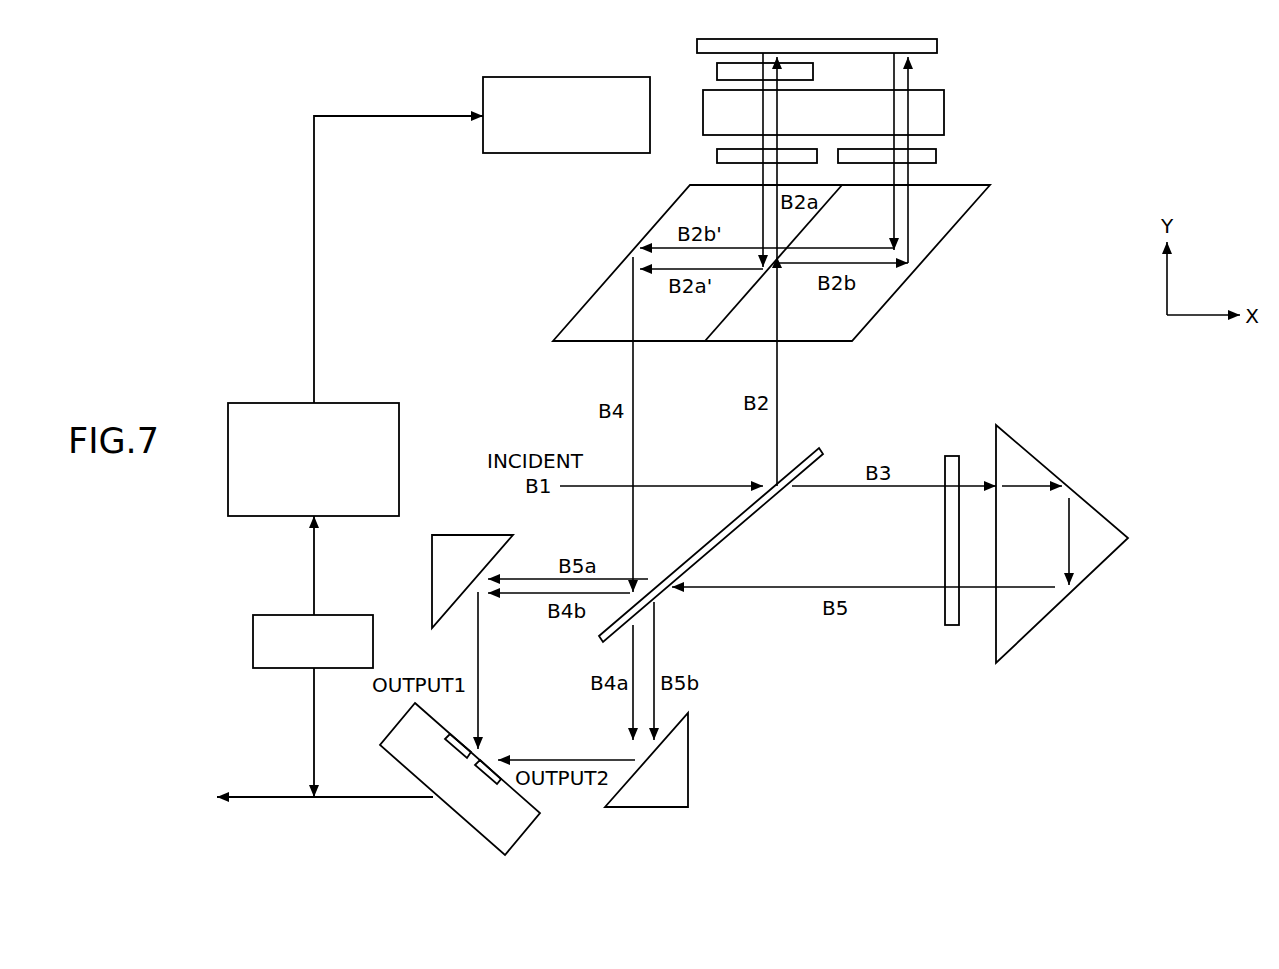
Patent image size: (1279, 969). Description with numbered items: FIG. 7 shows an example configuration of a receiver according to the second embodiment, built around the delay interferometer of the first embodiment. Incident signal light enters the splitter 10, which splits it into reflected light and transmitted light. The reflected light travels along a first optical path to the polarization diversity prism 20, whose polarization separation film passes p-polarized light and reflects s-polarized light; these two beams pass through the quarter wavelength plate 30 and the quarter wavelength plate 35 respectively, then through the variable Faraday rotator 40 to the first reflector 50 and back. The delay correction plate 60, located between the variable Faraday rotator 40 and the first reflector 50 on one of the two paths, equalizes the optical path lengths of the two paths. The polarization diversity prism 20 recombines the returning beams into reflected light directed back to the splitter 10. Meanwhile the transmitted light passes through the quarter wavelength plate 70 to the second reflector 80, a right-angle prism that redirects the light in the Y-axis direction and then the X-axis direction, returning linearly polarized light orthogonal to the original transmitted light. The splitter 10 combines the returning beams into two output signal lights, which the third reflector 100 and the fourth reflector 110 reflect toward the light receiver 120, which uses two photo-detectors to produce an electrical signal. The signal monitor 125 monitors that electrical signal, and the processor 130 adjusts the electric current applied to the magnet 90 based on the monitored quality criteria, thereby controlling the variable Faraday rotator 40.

The splitter 10 is at (823, 452).
The polarization diversity prism 20 is at (968, 185).
The quarter wavelength plate 30 is at (717, 153).
The quarter wavelength plate 35 is at (928, 148).
The variable Faraday rotator 40 is at (935, 90).
The first reflector 50 is at (928, 41).
The delay correction plate 60 is at (717, 67).
The quarter wavelength plate 70 is at (948, 455).
The second reflector 80 is at (1058, 470).
The magnet 90 is at (553, 77).
The third reflector 100 is at (432, 570).
The fourth reflector 110 is at (690, 762).
The light receiver 120 is at (405, 718).
The signal monitor 125 is at (335, 614).
The processor 130 is at (363, 403).